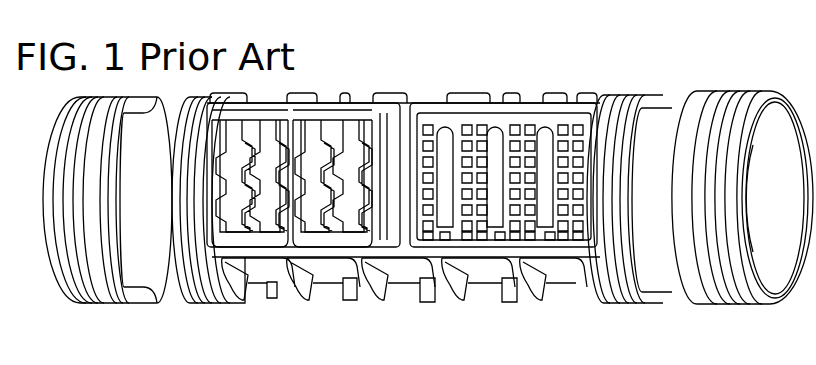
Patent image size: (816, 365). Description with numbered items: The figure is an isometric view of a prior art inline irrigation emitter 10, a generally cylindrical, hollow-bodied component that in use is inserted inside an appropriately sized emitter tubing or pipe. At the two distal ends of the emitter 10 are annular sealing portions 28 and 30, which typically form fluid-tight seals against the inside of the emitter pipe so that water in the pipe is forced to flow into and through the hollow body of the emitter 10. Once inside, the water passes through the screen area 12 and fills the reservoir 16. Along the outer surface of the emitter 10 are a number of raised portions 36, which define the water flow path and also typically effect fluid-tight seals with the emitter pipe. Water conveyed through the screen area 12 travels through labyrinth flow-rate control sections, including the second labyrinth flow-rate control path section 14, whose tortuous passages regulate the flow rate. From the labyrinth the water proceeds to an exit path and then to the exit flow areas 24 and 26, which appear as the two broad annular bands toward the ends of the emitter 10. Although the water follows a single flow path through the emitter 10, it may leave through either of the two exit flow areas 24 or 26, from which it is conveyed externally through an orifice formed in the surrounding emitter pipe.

The inline irrigation emitter 10 is at (657, 63).
The screen area 12 is at (523, 137).
The second labyrinth flow-rate control path section 14 is at (314, 150).
The reservoir 16 is at (487, 290).
The exit flow area 24 is at (663, 204).
The exit flow area 26 is at (147, 208).
The annular sealing portion 28 is at (108, 303).
The annular sealing portion 30 is at (740, 304).
The raised portions 36 is at (507, 303).